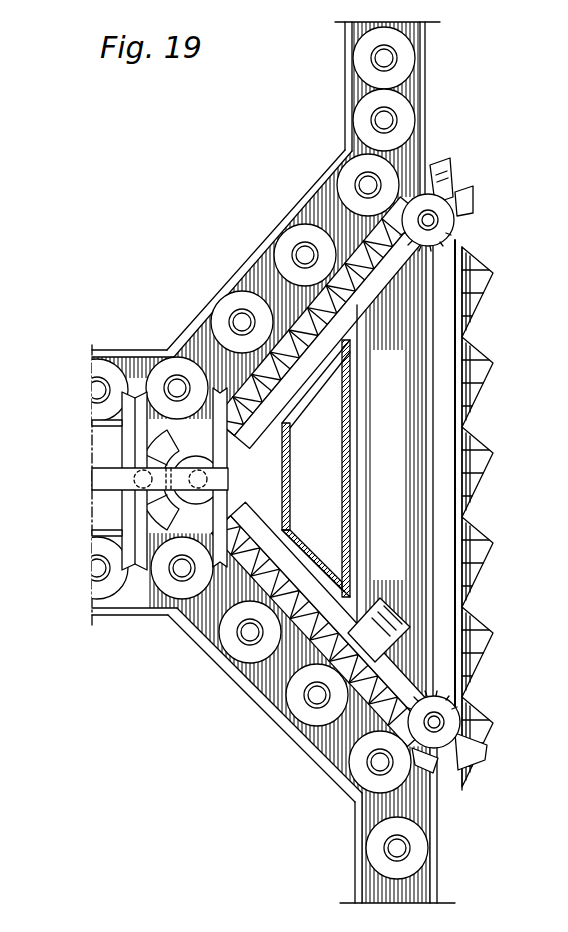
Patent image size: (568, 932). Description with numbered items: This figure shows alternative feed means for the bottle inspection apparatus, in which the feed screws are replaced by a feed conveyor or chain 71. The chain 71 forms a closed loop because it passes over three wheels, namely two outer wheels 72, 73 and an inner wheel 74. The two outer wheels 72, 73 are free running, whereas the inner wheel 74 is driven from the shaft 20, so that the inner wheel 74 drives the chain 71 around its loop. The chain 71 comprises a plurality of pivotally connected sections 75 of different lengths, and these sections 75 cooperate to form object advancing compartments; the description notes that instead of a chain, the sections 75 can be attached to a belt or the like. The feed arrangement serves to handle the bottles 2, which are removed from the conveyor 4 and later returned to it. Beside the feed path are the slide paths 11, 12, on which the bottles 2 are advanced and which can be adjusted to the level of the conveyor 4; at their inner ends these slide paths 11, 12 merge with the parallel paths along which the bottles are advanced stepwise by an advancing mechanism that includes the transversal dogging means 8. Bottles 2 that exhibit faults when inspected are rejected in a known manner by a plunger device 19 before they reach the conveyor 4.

The bottles 2 is at (366, 118).
The conveyor 4 is at (357, 455).
The transversal dogging means 8 is at (140, 395).
The slide path 11 is at (322, 188).
The slide path 12 is at (260, 695).
The plunger device 19 is at (385, 630).
The shaft 20 is at (143, 478).
The feed conveyor or chain 71 is at (263, 262).
The outer wheel 72 is at (458, 232).
The outer wheel 73 is at (445, 752).
The inner wheel 74 is at (220, 480).
The pivotally connected sections 75 is at (458, 192).